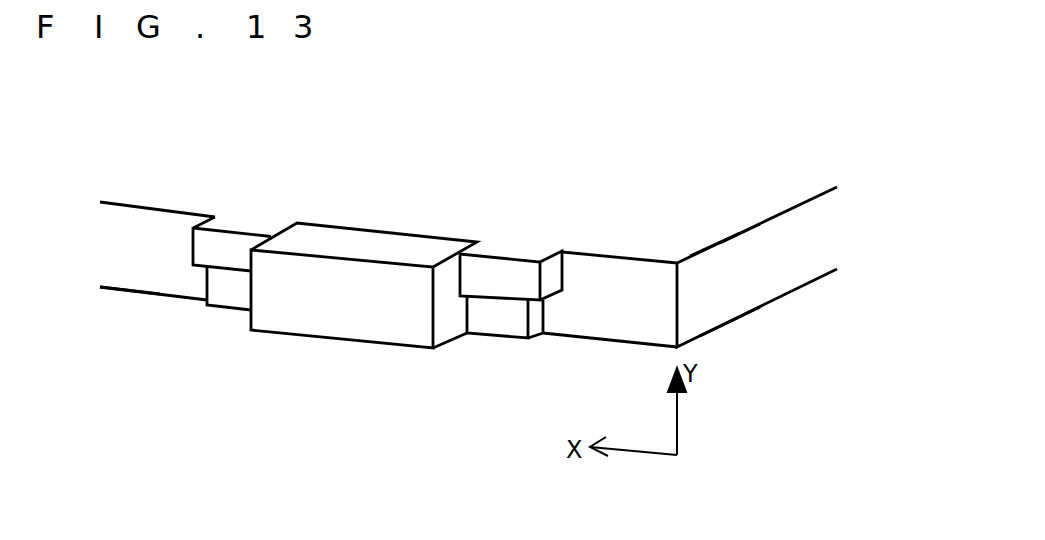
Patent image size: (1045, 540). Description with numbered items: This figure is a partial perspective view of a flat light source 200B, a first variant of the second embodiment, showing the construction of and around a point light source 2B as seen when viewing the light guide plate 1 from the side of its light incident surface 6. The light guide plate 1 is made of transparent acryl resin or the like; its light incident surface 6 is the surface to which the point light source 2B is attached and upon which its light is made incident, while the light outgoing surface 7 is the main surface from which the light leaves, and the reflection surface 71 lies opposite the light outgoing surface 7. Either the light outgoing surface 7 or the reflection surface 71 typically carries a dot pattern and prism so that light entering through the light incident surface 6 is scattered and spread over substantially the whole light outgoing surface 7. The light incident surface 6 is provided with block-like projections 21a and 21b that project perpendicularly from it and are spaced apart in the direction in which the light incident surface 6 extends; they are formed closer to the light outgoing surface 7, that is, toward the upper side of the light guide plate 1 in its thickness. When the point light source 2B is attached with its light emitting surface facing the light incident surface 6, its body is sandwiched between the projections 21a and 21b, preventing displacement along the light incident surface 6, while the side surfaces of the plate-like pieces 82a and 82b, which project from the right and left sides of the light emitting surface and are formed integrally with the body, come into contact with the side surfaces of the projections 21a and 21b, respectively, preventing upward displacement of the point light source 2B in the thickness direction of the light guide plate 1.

The light guide plate 1 is at (780, 260).
The light incident surface 6 is at (143, 257).
The light outgoing surface 7 is at (683, 187).
The reflection surface 71 is at (722, 325).
The flat light source 200B is at (743, 188).
The block-like projection 21a is at (512, 248).
The block-like projection 21b is at (252, 215).
The plate-like piece 82a is at (502, 308).
The plate-like piece 82b is at (232, 282).
The point light source 2B is at (340, 298).